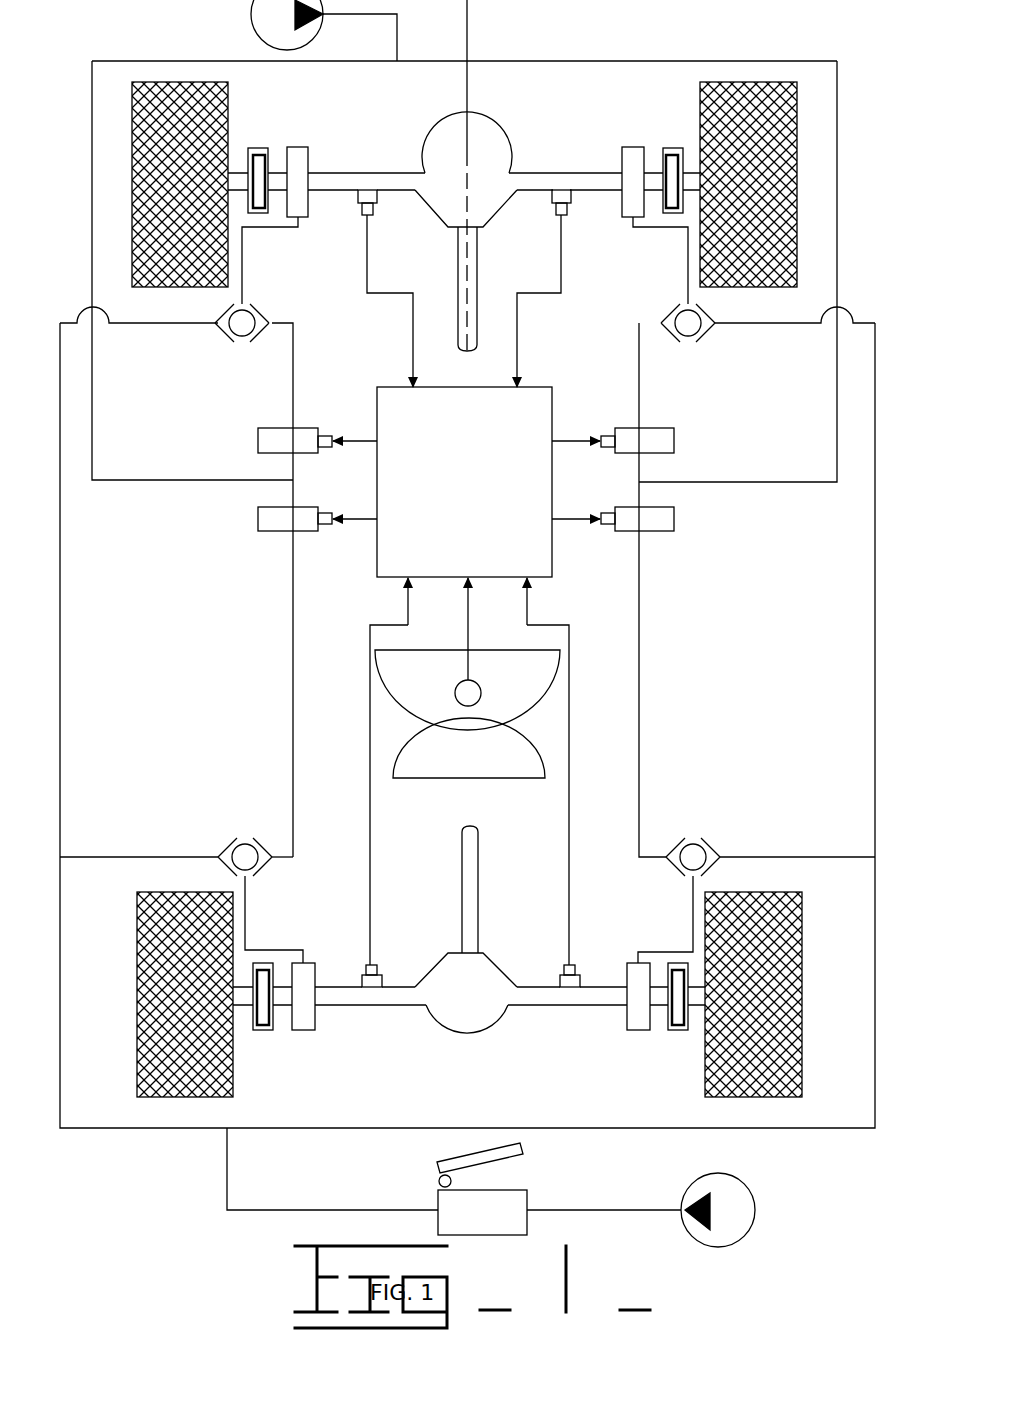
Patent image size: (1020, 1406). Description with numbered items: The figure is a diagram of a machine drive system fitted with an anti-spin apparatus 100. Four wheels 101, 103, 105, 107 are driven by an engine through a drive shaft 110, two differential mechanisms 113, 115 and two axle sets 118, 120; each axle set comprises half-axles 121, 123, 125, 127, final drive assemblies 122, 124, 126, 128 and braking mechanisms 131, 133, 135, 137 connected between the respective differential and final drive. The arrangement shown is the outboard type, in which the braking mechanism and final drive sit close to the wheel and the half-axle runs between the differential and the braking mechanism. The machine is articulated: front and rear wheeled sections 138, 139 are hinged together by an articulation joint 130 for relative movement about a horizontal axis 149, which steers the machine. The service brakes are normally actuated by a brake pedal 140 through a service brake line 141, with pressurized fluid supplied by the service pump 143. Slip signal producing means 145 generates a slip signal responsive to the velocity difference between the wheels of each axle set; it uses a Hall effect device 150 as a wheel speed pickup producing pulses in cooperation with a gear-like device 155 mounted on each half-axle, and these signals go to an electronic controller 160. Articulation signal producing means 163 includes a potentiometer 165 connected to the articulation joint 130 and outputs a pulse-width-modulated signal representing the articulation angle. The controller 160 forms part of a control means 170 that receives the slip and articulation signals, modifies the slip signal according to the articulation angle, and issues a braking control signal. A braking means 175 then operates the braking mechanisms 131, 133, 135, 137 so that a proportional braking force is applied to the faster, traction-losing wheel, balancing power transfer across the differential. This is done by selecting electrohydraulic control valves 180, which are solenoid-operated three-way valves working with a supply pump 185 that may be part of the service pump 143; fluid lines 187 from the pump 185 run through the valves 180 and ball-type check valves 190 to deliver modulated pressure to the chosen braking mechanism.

The anti-spin apparatus 100 is at (178, 1192).
The wheel 101 is at (228, 288).
The wheel 103 is at (727, 288).
The wheel 105 is at (803, 998).
The wheel 107 is at (137, 993).
The drive shaft 110 is at (477, 300).
The differential mechanism 113 is at (473, 147).
The differential mechanism 115 is at (475, 1035).
The axle set 118 is at (453, 120).
The axle set 120 is at (472, 1068).
The half-axle 121 is at (348, 173).
The final drive assembly 122 is at (255, 148).
The half-axle 123 is at (600, 173).
The final drive assembly 124 is at (673, 148).
The half-axle 125 is at (605, 1005).
The final drive assembly 126 is at (678, 1030).
The half-axle 127 is at (365, 1005).
The final drive assembly 128 is at (263, 1030).
The articulation joint 130 is at (420, 650).
The braking mechanism 131 is at (297, 147).
The braking mechanism 133 is at (633, 147).
The braking mechanism 135 is at (638, 1030).
The braking mechanism 137 is at (303, 1032).
The front wheeled section 138 is at (790, 502).
The rear wheeled section 139 is at (788, 840).
The brake pedal 140 is at (437, 1202).
The service brake line 141 is at (60, 675).
The service pump 143 is at (718, 1173).
The slip signal producing means 145 is at (246, 718).
The horizontal axis 149 is at (467, 45).
The Hall effect device 150 is at (367, 215).
The gear-like device 155 is at (357, 200).
The electronic controller 160 is at (553, 402).
The articulation signal producing means 163 is at (440, 790).
The potentiometer 165 is at (448, 780).
The control means 170 is at (352, 575).
The braking means 175 is at (262, 247).
The electrohydraulic control valve 180 is at (258, 441).
The supply pump 185 is at (250, 14).
The fluid line 187 is at (585, 61).
The check valve 190 is at (258, 310).